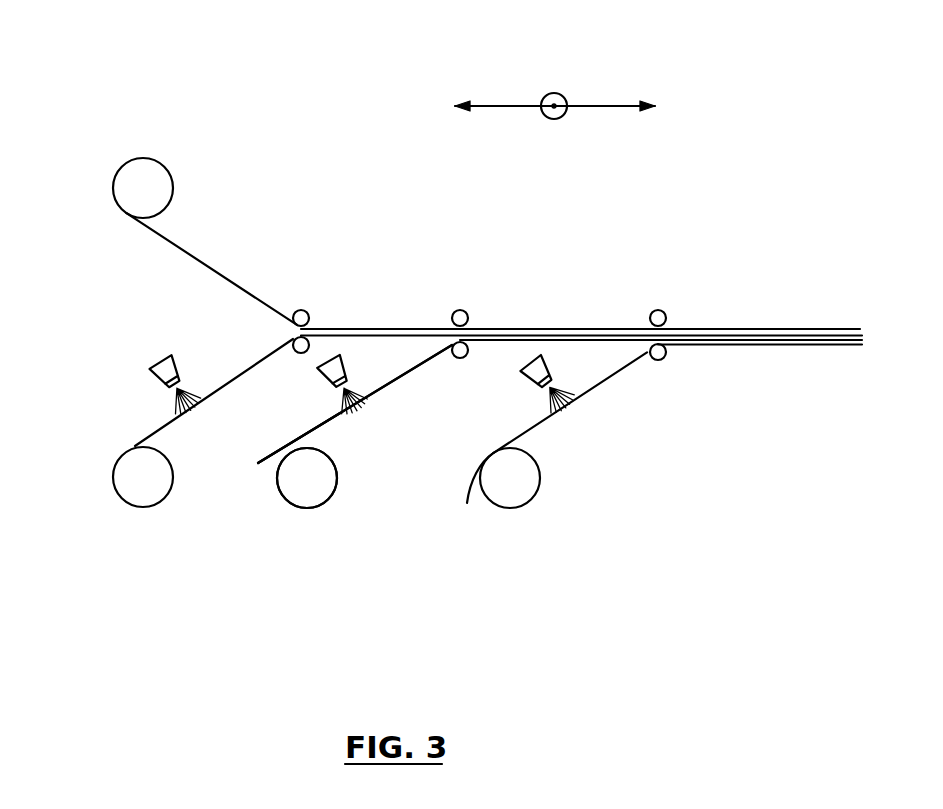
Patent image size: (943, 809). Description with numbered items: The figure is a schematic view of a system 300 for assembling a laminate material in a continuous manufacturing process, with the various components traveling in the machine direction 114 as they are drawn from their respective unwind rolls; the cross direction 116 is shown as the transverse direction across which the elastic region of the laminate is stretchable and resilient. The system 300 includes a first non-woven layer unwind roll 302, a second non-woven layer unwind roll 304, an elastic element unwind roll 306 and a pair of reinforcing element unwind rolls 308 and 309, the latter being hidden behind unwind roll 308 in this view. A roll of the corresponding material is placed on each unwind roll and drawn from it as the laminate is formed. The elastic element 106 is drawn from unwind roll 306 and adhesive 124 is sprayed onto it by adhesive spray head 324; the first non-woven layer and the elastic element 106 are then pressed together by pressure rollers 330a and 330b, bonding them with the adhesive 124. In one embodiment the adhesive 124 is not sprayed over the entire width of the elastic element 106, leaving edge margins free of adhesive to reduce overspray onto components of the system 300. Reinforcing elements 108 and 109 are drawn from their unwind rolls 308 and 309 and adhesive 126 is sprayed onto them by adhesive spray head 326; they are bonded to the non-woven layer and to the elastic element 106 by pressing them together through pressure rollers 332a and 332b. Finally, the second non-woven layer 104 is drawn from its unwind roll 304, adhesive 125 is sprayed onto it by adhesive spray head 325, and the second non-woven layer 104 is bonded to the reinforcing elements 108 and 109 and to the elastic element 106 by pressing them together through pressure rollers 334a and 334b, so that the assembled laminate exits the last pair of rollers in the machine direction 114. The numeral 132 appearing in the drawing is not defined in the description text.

The system 300 is at (762, 440).
The first non-woven layer unwind roll 302 is at (172, 168).
The second non-woven layer unwind roll 304 is at (530, 500).
The elastic element unwind roll 306 is at (113, 490).
The reinforcing element unwind roll 308 is at (311, 508).
The reinforcing element unwind roll 309 is at (323, 527).
The second non-woven layer 104 is at (533, 423).
The elastic element 106 is at (193, 253).
The reinforcing element 108 is at (343, 417).
The reinforcing element 109 is at (376, 435).
The machine direction 114 is at (613, 103).
The cross direction 116 is at (557, 93).
The adhesive 124 is at (175, 409).
The adhesive 125 is at (471, 496).
The adhesive 126 is at (276, 453).
The adhesive layer 132 is at (256, 480).
The adhesive spray head 324 is at (158, 362).
The adhesive spray head 325 is at (520, 371).
The adhesive spray head 326 is at (316, 370).
The pressure roller 330a is at (302, 309).
The pressure roller 330b is at (293, 352).
The pressure roller 332a is at (465, 310).
The pressure roller 332b is at (458, 359).
The pressure roller 334a is at (662, 310).
The pressure roller 334b is at (660, 361).